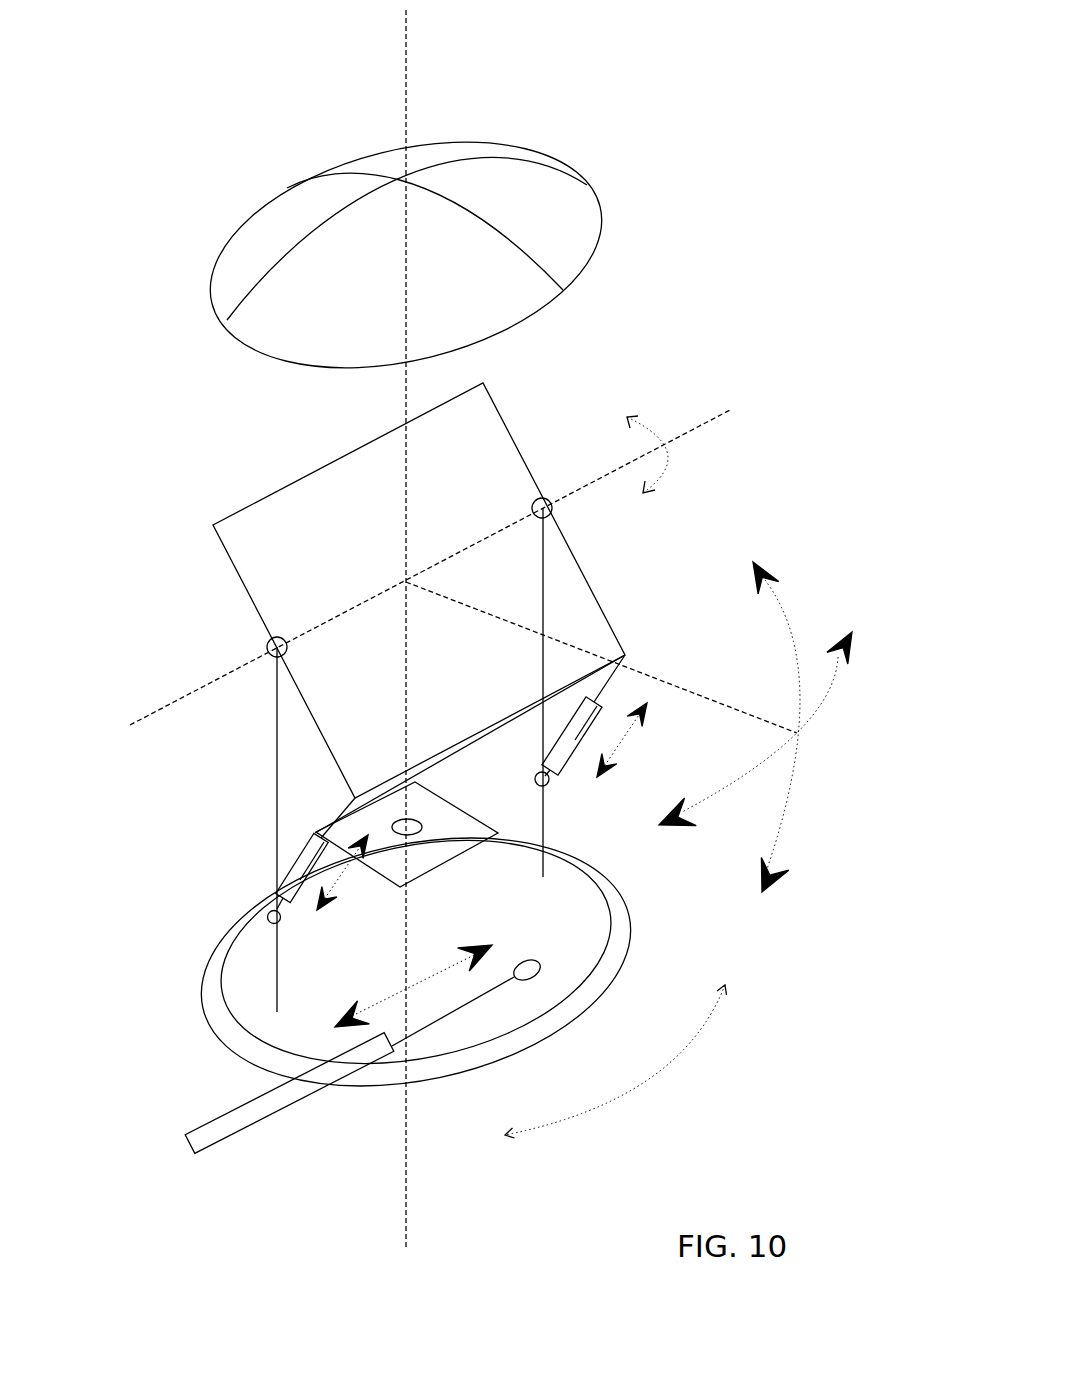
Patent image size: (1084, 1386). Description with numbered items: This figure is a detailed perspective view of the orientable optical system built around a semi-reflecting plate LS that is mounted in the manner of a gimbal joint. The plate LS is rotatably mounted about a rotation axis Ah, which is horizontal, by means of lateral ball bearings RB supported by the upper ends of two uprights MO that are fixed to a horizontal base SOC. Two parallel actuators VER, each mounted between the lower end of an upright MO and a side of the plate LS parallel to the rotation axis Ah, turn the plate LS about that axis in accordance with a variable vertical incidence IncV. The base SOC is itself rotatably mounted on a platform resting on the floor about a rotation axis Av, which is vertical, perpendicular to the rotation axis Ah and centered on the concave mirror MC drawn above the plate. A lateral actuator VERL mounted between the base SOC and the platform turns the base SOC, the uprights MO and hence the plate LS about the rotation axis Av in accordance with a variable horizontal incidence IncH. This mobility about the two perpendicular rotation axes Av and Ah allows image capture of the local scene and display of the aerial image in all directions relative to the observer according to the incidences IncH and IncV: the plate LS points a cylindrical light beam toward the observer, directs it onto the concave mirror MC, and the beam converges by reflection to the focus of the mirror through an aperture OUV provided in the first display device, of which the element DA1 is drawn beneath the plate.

The rotation axis Av is at (405, 68).
The concave mirror MC is at (590, 217).
The rotation axis Ah is at (708, 422).
The semi-reflecting plate LS is at (242, 533).
The lateral ball bearings RB is at (265, 647).
The uprights MO is at (277, 760).
The parallel actuators VER is at (298, 862).
The first diaphragm plate DA1 is at (428, 808).
The aperture OUV is at (393, 827).
The horizontal base SOC is at (243, 992).
The lateral actuator VERL is at (225, 1138).
The variable vertical incidence IncV is at (790, 627).
The variable horizontal incidence IncH is at (827, 703).